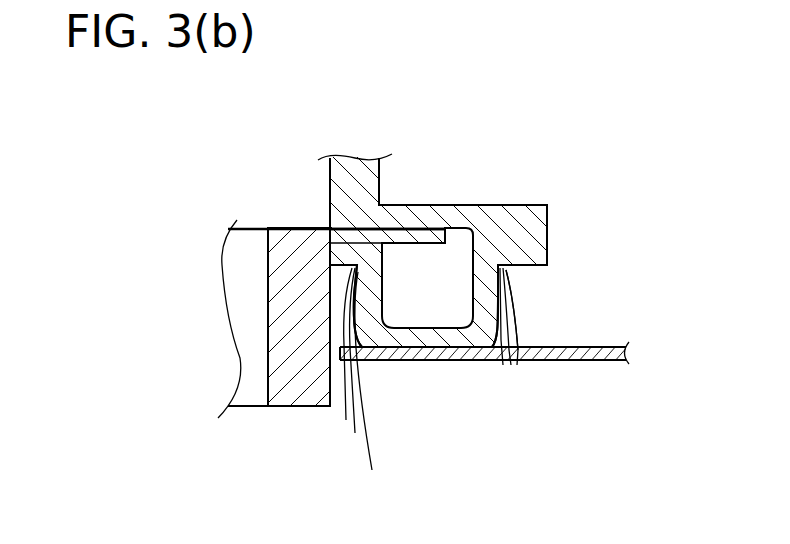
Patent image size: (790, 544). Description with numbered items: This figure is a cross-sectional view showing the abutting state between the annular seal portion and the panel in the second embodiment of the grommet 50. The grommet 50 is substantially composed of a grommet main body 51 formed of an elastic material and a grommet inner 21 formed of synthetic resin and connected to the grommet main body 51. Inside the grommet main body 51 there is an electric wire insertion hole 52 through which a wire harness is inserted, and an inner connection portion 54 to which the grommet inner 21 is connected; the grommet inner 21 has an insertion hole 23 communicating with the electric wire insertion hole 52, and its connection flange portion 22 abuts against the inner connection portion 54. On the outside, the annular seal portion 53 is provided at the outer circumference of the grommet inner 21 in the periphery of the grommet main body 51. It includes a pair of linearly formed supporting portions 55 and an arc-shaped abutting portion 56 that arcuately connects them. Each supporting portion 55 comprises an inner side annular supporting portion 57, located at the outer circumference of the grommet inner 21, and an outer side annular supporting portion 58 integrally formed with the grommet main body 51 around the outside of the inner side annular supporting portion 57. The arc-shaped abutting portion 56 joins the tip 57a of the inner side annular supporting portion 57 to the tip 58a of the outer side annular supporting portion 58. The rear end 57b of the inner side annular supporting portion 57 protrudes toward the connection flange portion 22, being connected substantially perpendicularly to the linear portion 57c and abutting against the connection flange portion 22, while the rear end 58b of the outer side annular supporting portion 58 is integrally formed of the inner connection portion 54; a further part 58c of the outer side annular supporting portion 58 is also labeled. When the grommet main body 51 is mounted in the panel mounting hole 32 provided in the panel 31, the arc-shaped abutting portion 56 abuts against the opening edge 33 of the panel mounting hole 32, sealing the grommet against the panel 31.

The grommet inner 21 is at (290, 226).
The connection flange portion 22 is at (413, 226).
The insertion hole 23 is at (250, 280).
The panel 31 is at (630, 352).
The panel mounting hole 32 is at (340, 355).
The opening edge 33 is at (458, 372).
The grommet 50 is at (436, 232).
The grommet main body 51 is at (513, 204).
The electric wire insertion hole 52 is at (328, 188).
The annular seal portion 53 is at (543, 307).
The inner connection portion 54 is at (488, 204).
The supporting portion 55 is at (336, 307).
The arc-shaped abutting portion 56 is at (418, 362).
The inner side annular supporting portion 57 is at (311, 389).
The tip 57a is at (340, 387).
The rear end 57b is at (346, 420).
The linear portion 57c is at (355, 433).
The outer side annular supporting portion 58 is at (566, 365).
The tip 58a is at (503, 365).
The rear end 58b is at (549, 335).
The right sheet third layer 58c is at (511, 365).